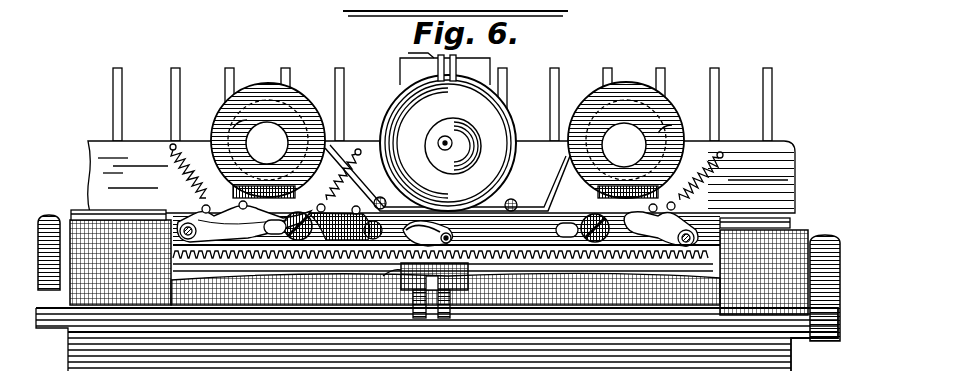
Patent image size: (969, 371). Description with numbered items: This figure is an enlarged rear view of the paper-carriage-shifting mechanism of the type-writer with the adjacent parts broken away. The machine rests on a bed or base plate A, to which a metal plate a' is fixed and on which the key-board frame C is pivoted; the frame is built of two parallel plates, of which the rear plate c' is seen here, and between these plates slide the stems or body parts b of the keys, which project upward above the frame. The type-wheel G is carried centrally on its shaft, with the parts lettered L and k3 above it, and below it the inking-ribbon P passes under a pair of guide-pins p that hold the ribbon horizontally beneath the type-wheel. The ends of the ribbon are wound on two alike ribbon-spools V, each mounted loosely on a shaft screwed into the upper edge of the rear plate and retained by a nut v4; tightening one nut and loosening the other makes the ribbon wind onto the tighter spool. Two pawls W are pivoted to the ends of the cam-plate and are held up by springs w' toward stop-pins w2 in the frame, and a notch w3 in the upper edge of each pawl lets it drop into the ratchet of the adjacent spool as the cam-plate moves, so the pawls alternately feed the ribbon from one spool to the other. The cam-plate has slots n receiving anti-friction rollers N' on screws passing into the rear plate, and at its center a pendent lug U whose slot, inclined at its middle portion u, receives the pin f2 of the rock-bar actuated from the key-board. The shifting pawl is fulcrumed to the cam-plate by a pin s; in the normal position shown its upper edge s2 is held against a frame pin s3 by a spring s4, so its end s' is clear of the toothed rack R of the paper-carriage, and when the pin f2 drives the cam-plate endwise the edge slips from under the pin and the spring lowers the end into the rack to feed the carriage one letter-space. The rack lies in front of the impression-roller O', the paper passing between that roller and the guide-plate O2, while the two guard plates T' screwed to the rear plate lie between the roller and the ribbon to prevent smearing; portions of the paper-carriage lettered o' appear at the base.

The key stems b is at (172, 76).
The key-board frame C is at (84, 137).
The rear plate of the key-frame c' is at (450, 174).
The inking-ribbon P is at (342, 165).
The guide-pins p is at (445, 198).
The ribbon-spools V is at (447, 140).
The spool nut v4 is at (446, 129).
The pawl springs w' is at (446, 172).
The type-wheel G is at (448, 143).
The yoke L is at (428, 134).
The pins k3 is at (428, 58).
The pawl fulcrum pin s is at (343, 209).
The pawl spring s4 is at (319, 194).
The key-frame pin s3 is at (353, 202).
The upper edge portion of the pawl s2 is at (339, 225).
The ribbon-feed pawls W is at (686, 208).
The pawl notch w3 is at (439, 221).
The stop-pins w2 is at (479, 197).
The anti-friction rollers N' is at (422, 227).
The cam-plate slots n is at (436, 233).
The pawl end s' is at (408, 230).
The paper-carriage rack R is at (446, 261).
The impression-roller O' is at (439, 267).
The guard plates T' is at (457, 209).
The guide-plate O2 is at (41, 208).
The pendent lug U is at (440, 290).
The inclined slot portion u is at (432, 283).
The rock-bar pin f2 is at (392, 279).
The bed-plate A is at (437, 339).
The rail o' is at (391, 332).
The metal plate a' is at (394, 352).